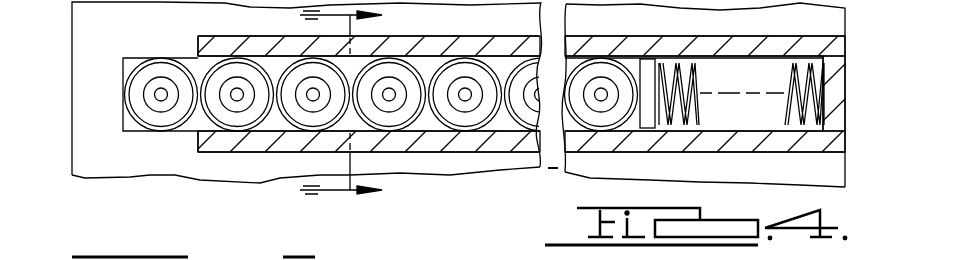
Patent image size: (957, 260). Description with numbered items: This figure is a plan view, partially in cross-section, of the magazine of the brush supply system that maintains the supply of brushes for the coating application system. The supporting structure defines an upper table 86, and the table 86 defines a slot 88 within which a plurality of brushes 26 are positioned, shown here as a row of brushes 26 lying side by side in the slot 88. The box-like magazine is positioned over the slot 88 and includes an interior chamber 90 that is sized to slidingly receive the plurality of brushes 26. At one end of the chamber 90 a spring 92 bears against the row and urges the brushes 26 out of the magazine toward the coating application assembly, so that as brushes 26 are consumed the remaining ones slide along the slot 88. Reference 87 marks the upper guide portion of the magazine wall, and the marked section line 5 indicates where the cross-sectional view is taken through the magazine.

The upper table 86 is at (118, 36).
The upper guide rail 87 is at (452, 46).
The slot 88 is at (132, 62).
The interior chamber 90 is at (505, 62).
The brushes 26 is at (140, 107).
The spring 92 is at (695, 82).
The section line 5- 5 is at (352, 115).